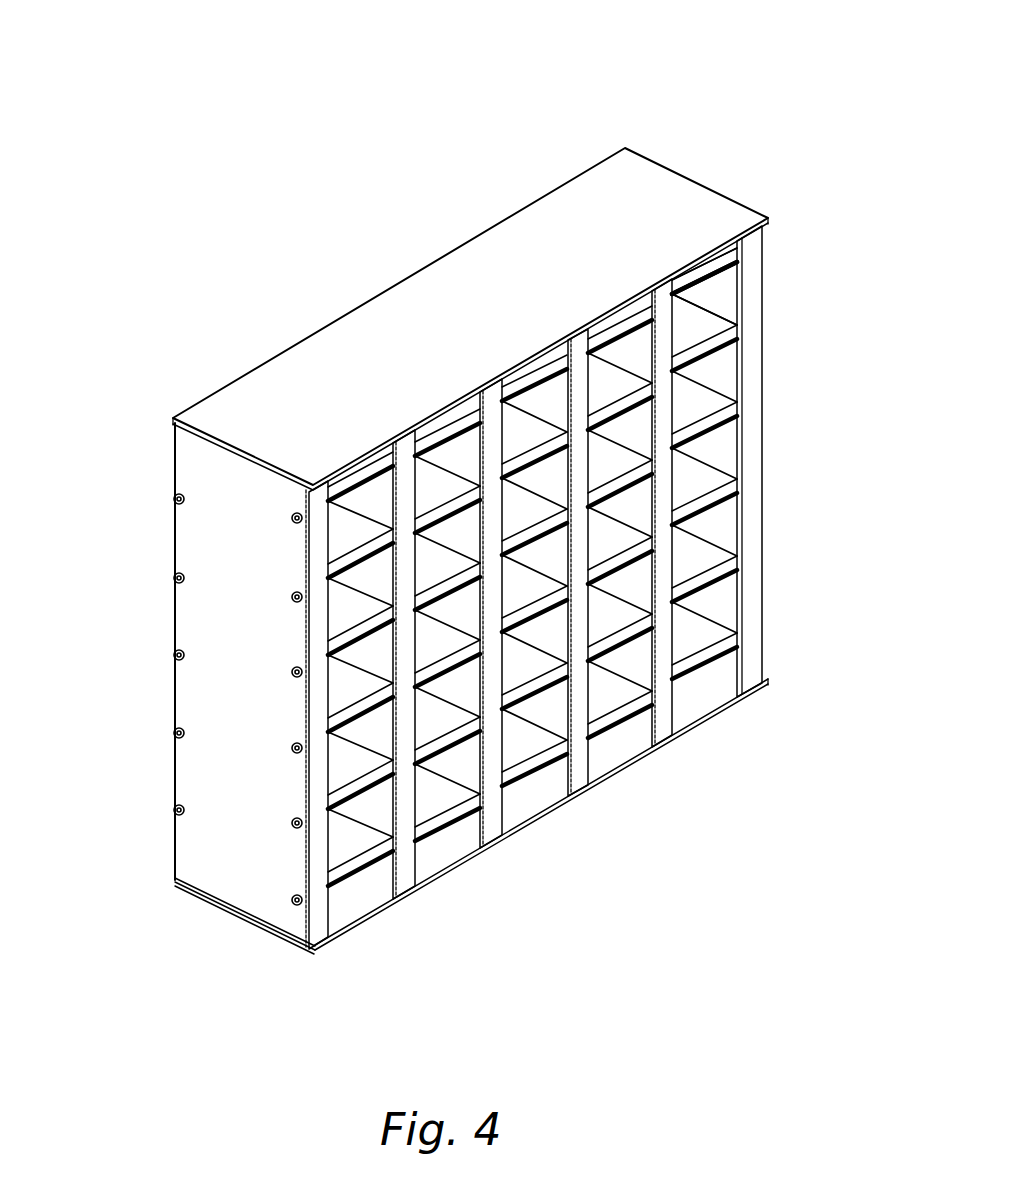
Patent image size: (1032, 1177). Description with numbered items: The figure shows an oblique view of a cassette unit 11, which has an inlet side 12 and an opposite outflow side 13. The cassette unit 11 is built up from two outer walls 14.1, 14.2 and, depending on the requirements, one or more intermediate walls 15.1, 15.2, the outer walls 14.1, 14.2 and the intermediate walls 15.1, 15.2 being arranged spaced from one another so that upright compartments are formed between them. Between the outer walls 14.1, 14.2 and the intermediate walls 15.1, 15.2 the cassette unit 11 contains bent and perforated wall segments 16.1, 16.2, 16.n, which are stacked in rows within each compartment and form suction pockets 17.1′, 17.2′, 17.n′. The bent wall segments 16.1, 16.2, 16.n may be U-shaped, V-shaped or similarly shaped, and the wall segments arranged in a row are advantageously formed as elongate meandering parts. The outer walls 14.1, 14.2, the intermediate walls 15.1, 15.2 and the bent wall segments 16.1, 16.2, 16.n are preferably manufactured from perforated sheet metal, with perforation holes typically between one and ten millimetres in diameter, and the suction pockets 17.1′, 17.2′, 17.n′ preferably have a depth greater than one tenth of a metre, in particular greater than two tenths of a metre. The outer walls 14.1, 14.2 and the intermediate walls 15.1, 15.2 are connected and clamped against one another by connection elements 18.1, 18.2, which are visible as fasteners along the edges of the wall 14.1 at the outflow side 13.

The cassette unit 11 is at (477, 546).
The inlet side 12 is at (810, 712).
The outflow side 13 is at (162, 395).
The outer wall 14.1 is at (317, 925).
The outer wall 14.2 is at (757, 687).
The intermediate wall 15.1 is at (407, 875).
The intermediate wall 15.2 is at (490, 830).
The bent and perforated wall segment 16.1 is at (358, 873).
The bent and perforated wall segment 16.2 is at (445, 826).
The bent and perforated wall segment 16.n is at (700, 667).
The suction pocket 17.1′ is at (451, 766).
The suction pocket 17.2′ is at (532, 735).
The suction pocket 17.n′ is at (775, 559).
The connection element 18.1 is at (174, 502).
The connection element 18.2 is at (293, 518).